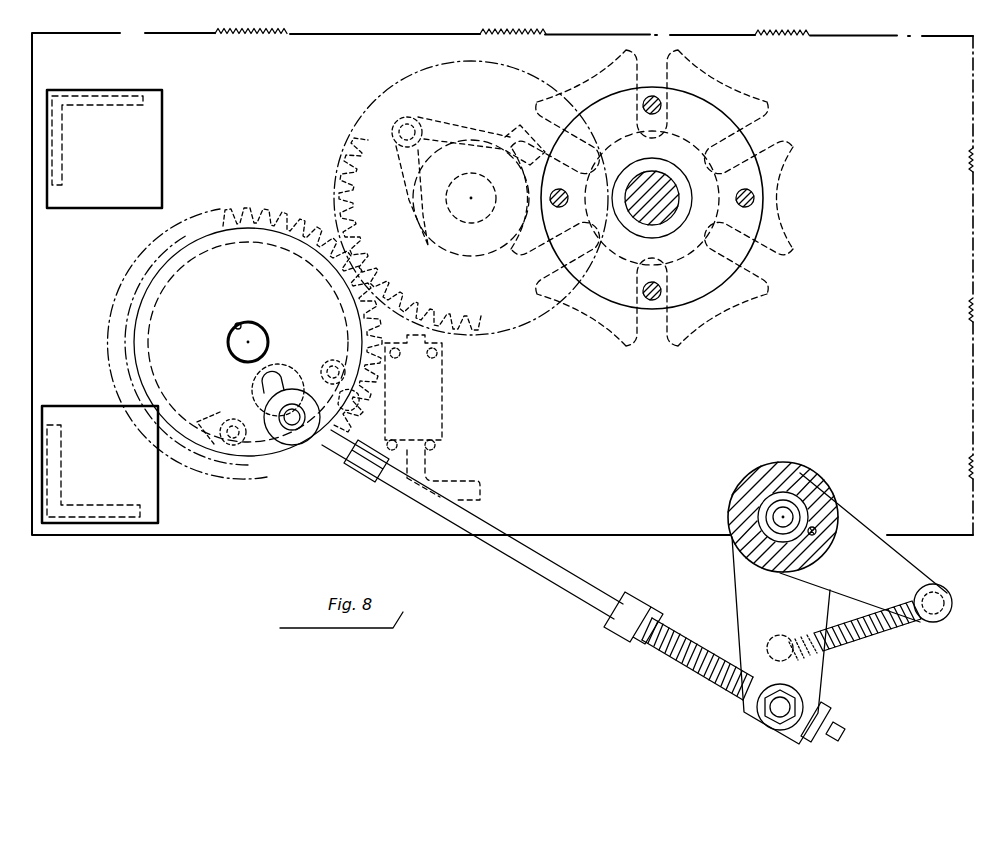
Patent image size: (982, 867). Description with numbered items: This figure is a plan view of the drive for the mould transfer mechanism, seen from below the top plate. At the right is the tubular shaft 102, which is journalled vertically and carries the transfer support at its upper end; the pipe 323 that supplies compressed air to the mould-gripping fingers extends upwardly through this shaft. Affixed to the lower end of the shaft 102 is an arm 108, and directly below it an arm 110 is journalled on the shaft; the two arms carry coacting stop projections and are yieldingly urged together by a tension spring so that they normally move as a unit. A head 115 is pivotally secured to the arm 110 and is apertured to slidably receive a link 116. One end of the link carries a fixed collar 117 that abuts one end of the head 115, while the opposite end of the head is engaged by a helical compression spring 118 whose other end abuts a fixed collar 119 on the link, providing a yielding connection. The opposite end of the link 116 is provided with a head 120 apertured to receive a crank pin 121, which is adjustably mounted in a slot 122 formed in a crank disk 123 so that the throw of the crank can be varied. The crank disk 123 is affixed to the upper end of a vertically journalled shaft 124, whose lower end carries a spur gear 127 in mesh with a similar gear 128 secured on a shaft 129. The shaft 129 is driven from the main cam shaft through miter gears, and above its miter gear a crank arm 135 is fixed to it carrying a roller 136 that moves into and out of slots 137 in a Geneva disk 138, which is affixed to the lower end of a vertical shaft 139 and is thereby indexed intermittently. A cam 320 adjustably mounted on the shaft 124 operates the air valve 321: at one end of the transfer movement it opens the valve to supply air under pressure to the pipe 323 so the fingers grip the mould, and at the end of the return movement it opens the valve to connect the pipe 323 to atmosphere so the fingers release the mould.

The tubular shaft 102 is at (795, 507).
The arm 108 is at (866, 566).
The arm 110 is at (781, 640).
The head 115 is at (812, 704).
The link 116 is at (591, 587).
The fixed collar 117 is at (807, 740).
The helical compression spring 118 is at (676, 633).
The fixed collar 119 is at (630, 608).
The head 120 is at (347, 470).
The crank pin 121 is at (272, 414).
The slot 122 is at (273, 380).
The crank disk 123 is at (235, 344).
The shaft 124 is at (253, 331).
The spur gear 127 is at (263, 213).
The gear 128 is at (343, 153).
The shaft 129 is at (419, 226).
The crank arm 135 is at (447, 117).
The roller 136 is at (415, 103).
The slots 137 is at (773, 117).
The Geneva disk 138 is at (757, 98).
The shaft 139 is at (660, 186).
The cam 320 is at (330, 300).
The air valve 321 is at (443, 388).
The pipe 323 is at (480, 477).